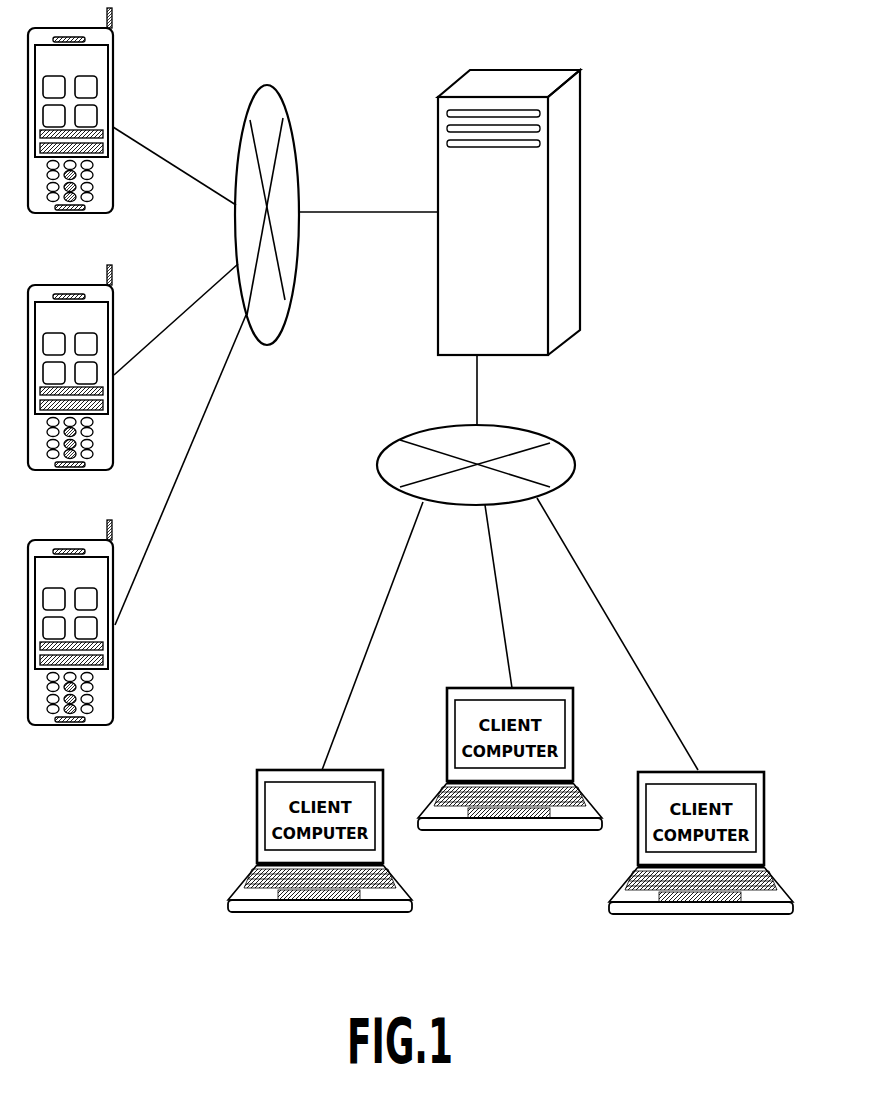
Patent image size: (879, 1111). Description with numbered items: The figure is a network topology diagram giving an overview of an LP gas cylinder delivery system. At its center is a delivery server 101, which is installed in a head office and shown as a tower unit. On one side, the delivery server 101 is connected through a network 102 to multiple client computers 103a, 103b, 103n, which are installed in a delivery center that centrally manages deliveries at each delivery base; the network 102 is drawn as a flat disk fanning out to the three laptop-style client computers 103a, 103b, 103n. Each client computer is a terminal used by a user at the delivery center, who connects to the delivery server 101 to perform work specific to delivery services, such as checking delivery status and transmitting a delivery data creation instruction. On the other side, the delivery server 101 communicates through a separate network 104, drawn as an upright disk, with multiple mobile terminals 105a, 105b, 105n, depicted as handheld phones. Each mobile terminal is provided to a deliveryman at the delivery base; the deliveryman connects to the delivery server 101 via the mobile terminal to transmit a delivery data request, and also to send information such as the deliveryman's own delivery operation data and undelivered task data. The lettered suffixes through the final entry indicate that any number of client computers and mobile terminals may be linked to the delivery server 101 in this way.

The delivery server 101 is at (510, 70).
The network 102 is at (565, 440).
The client computer 103a is at (340, 770).
The client computer 103b is at (527, 687).
The client computer 103n is at (770, 748).
The network 104 is at (270, 85).
The mobile terminal 105a is at (150, 40).
The mobile terminal 105b is at (152, 295).
The mobile terminal 105n is at (150, 643).